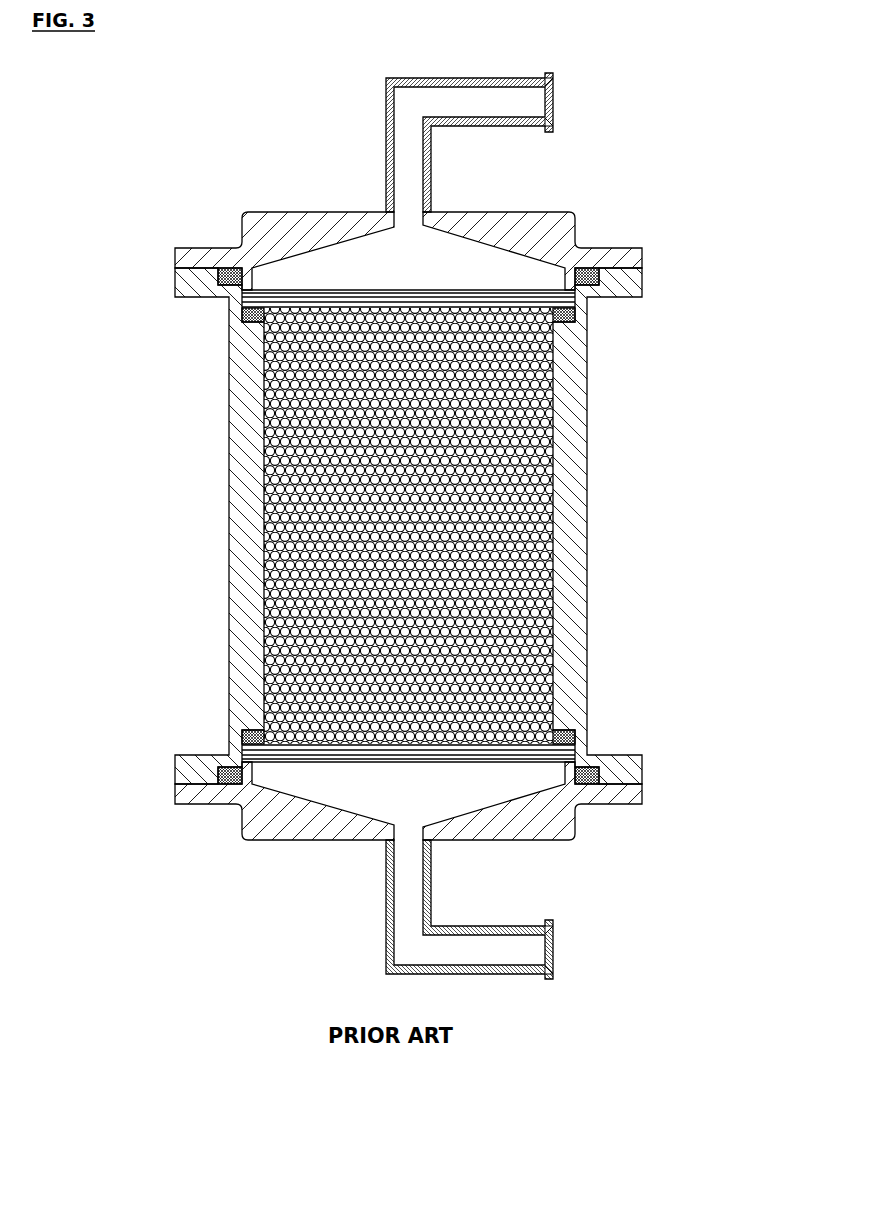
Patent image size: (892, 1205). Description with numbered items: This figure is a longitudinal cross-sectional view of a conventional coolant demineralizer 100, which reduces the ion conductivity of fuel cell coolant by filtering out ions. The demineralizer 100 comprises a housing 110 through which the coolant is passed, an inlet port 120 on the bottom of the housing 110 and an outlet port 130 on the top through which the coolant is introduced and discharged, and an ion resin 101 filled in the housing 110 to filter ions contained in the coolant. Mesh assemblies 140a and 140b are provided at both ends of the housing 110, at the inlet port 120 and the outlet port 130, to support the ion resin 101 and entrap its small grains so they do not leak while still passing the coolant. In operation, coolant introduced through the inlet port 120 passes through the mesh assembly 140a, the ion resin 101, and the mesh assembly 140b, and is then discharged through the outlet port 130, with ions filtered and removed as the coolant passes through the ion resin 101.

The demineralizer 100 is at (206, 566).
The ion resin 101 is at (268, 446).
The housing 110 is at (585, 530).
The inlet port 120 is at (386, 918).
The outlet port 130 is at (386, 130).
The mesh assembly 140a is at (548, 712).
The mesh assembly 140b is at (583, 347).